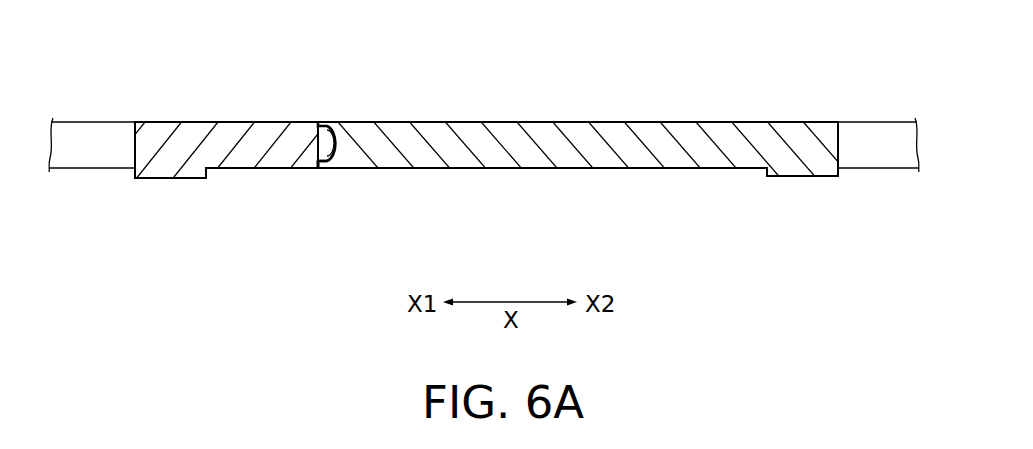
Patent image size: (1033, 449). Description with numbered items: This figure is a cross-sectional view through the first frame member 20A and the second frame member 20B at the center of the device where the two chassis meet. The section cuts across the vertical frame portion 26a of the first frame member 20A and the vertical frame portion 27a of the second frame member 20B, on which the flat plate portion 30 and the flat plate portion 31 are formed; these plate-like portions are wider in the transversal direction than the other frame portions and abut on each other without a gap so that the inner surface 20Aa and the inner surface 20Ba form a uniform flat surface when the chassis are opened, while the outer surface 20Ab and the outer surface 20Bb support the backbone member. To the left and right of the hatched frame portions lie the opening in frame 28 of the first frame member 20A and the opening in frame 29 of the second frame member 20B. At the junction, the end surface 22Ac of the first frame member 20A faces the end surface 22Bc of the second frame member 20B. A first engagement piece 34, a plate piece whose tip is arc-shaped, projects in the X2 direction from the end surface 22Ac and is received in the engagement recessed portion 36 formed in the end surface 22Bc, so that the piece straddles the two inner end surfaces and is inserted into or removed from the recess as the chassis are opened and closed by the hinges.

The first frame member 20A is at (100, 122).
The second frame member 20B is at (743, 122).
The inner surface of first frame member 20Aa is at (203, 122).
The outer surface of first frame member 20Ab is at (232, 169).
The inner surface of second frame member 20Ba is at (657, 122).
The outer surface of second frame member 20Bb is at (657, 169).
The end surface of first frame member 22Ac is at (337, 127).
The end surface of second frame member 22Bc is at (307, 169).
The vertical frame portion 26a is at (235, 137).
The vertical frame portion 27a is at (543, 137).
The opening in frame 28 is at (98, 153).
The opening in frame 29 is at (880, 150).
The flat plate portion 30 is at (458, 122).
The flat plate portion 31 is at (155, 122).
The first engagement piece 34 is at (360, 122).
The engagement recessed portion 36 is at (322, 140).